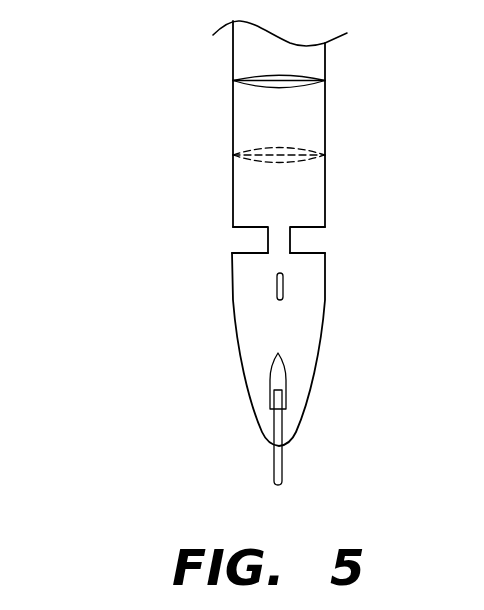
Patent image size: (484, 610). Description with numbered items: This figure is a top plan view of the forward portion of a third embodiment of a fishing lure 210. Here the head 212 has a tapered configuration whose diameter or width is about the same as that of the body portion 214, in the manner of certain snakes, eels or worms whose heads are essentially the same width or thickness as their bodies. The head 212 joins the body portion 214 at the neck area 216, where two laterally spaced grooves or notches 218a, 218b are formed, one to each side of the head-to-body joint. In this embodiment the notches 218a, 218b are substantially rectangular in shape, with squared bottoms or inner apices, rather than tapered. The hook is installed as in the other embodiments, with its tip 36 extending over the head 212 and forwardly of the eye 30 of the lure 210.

The fishing lure 210 is at (138, 62).
The body portion 214 is at (233, 113).
The neck area 216 is at (278, 243).
The notch 218a is at (310, 240).
The notch 218b is at (250, 238).
The head 212 is at (240, 363).
The eye 30 is at (282, 300).
The tip 36 is at (286, 375).